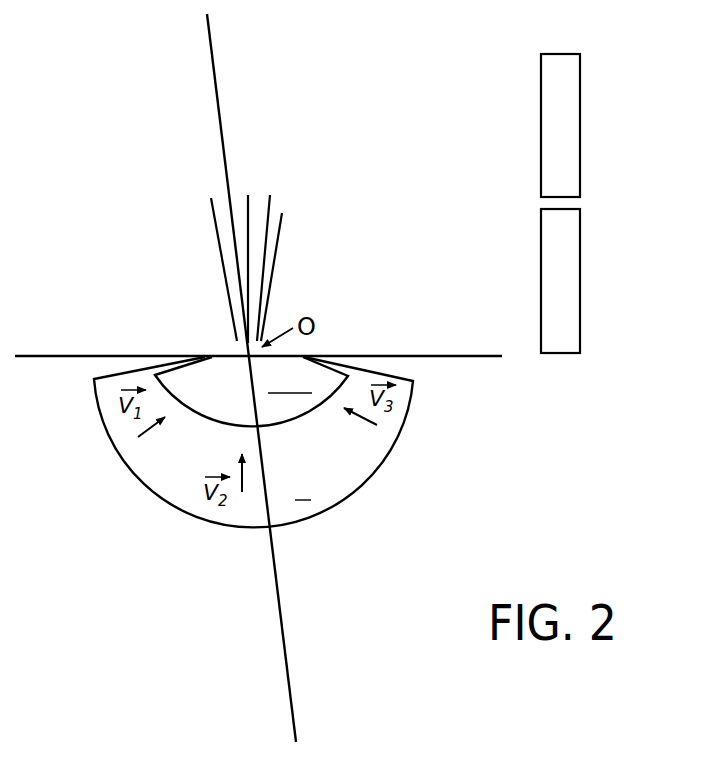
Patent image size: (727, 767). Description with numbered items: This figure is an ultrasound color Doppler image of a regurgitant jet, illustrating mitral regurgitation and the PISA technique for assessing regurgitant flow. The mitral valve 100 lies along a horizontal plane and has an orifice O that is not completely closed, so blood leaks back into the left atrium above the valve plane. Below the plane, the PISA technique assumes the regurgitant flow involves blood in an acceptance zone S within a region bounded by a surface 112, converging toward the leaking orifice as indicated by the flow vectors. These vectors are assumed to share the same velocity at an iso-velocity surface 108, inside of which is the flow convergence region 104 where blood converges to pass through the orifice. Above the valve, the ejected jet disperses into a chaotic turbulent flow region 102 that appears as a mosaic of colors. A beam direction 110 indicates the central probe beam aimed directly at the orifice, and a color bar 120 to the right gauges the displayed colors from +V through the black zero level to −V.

The mitral valve 100 is at (382, 355).
The turbulent flow region 102 is at (278, 245).
The inner region 104 is at (222, 377).
The iso-velocity surface 108 is at (312, 412).
The beam direction 110 is at (213, 72).
The surface 112 is at (358, 490).
The color bar 120 is at (495, 92).